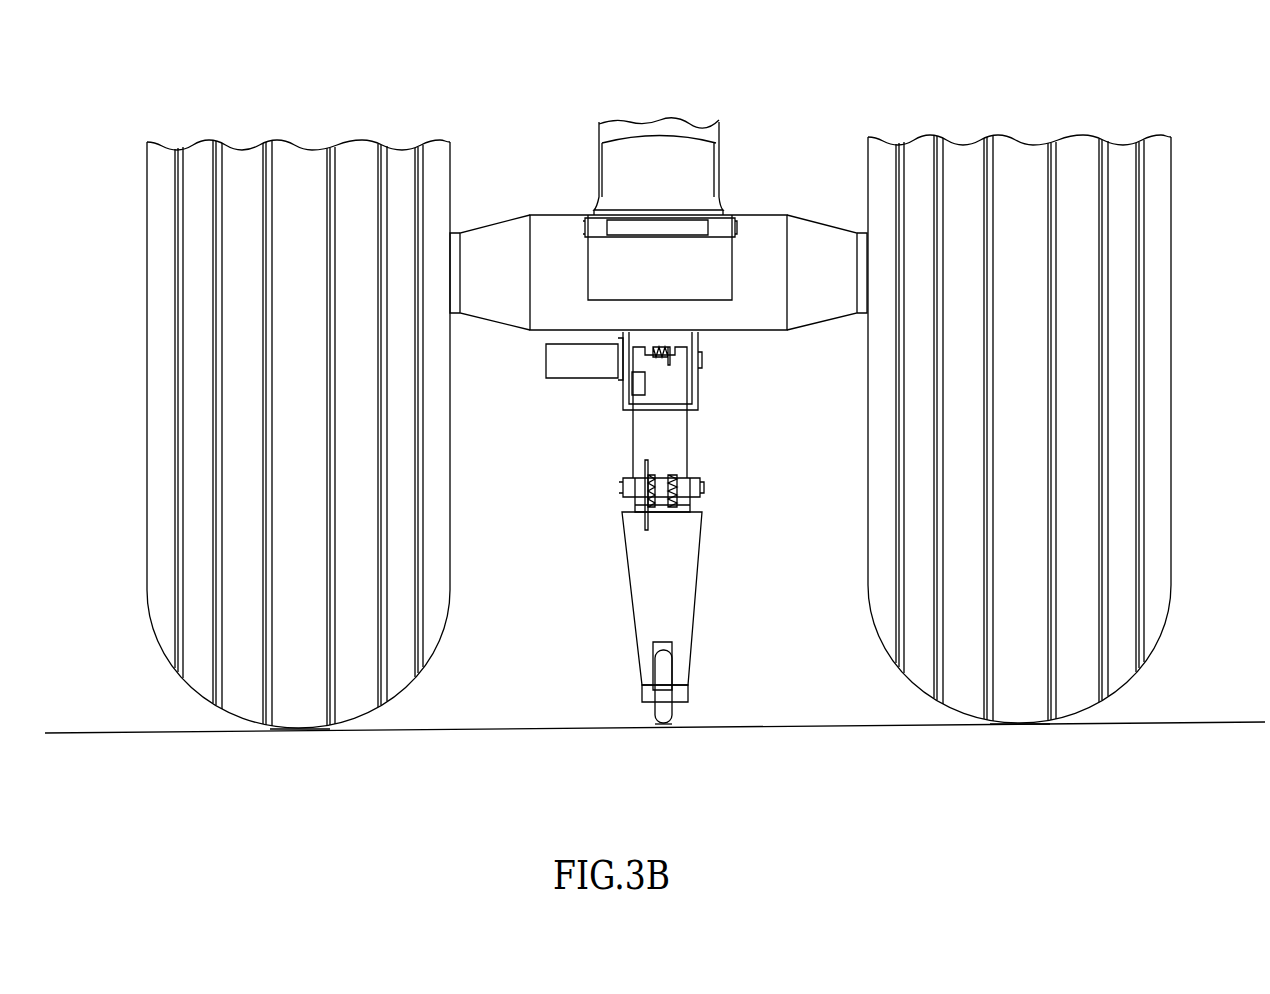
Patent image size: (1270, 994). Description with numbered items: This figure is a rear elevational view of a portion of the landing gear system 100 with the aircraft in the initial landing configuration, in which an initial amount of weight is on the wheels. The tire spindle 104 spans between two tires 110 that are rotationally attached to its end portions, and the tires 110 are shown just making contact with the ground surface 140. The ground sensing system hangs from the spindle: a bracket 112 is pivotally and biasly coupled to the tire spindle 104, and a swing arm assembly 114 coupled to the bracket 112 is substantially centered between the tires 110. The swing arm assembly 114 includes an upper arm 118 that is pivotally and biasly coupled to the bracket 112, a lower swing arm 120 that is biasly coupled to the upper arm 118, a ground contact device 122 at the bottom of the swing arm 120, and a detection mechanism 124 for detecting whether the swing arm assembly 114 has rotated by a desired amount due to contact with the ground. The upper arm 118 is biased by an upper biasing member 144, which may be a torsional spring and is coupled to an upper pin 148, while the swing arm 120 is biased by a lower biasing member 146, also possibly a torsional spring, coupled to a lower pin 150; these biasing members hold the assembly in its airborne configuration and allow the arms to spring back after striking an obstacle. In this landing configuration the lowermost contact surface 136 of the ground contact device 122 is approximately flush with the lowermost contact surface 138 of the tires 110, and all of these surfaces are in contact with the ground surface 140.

The landing gear system 100 is at (535, 118).
The tire spindle 104 is at (755, 213).
The tires 110 is at (148, 455).
The bracket 112 is at (700, 387).
The swing arm assembly 114 is at (600, 440).
The upper arm 118 is at (690, 428).
The swing arm 120 is at (697, 580).
The ground contact device 122 is at (667, 712).
The detection mechanism 124 is at (558, 362).
The lowermost contact surface of the ground contact device 136 is at (664, 728).
The lowermost contact surface of the tires 138 is at (302, 733).
The ground surface 140 is at (572, 722).
The upper biasing member 144 is at (668, 343).
The lower biasing member 146 is at (672, 476).
The upper pin 148 is at (702, 357).
The lower pin 150 is at (703, 490).